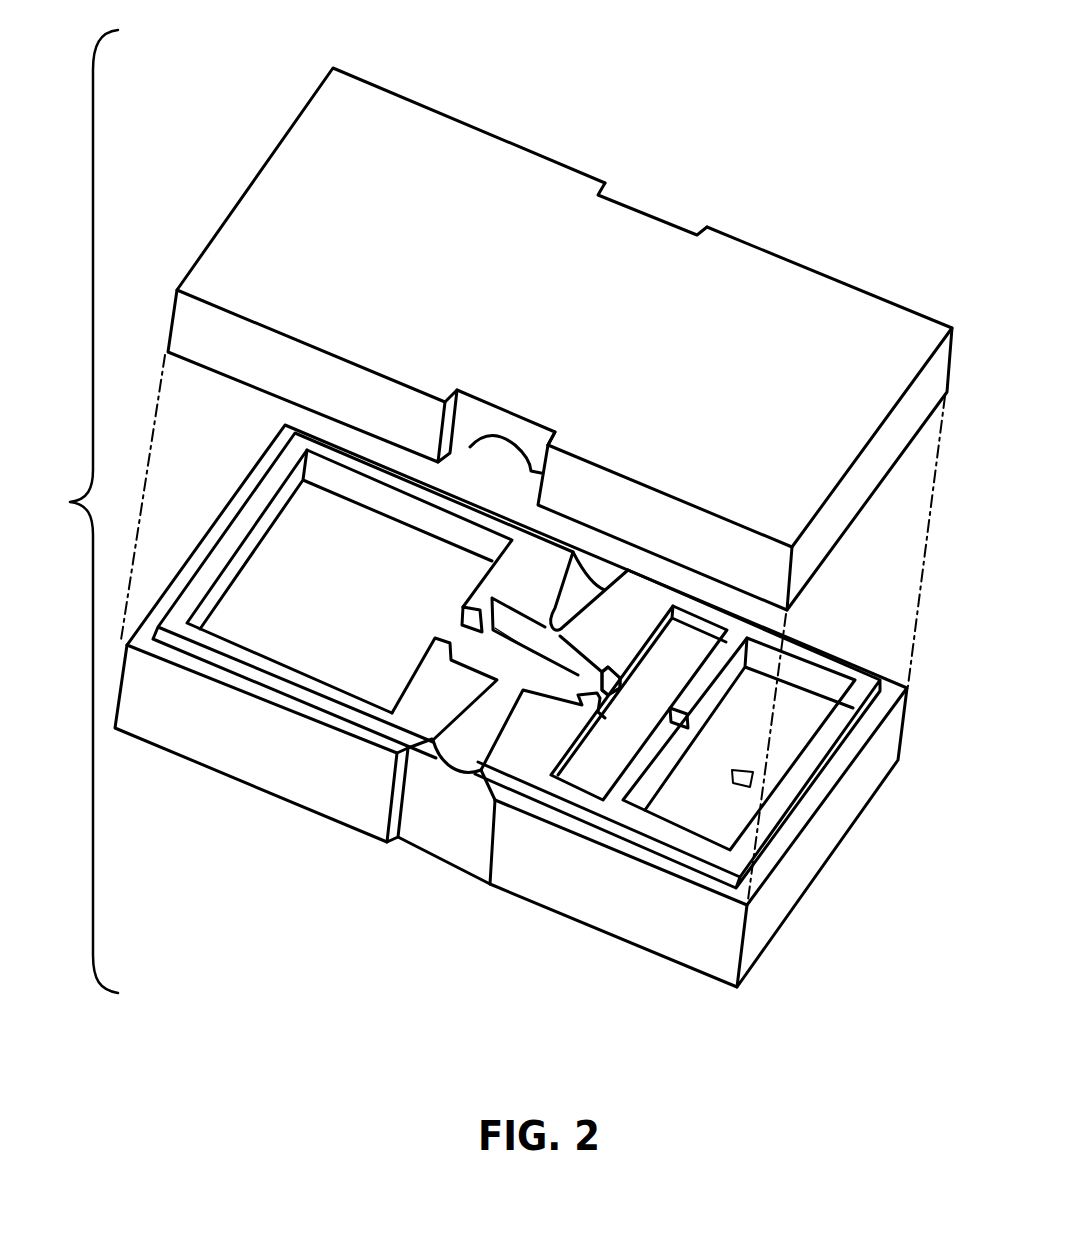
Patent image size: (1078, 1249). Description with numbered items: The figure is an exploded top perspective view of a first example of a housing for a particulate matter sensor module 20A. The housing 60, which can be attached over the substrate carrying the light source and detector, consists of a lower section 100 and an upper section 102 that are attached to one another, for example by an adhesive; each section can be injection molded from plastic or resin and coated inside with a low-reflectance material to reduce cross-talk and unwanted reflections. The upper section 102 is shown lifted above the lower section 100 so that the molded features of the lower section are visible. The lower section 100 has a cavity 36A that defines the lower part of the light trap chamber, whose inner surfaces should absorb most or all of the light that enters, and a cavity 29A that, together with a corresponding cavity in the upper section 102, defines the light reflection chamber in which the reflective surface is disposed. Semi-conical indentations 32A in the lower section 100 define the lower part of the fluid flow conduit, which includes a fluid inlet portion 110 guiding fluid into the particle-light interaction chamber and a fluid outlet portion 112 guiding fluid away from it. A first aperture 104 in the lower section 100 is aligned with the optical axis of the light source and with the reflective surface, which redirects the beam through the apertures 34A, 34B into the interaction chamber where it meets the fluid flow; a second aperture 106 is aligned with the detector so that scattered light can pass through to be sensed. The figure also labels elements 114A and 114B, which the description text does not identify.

The particulate matter sensor module 20A is at (668, 152).
The housing 60 is at (77, 511).
The lower section 100 is at (212, 773).
The upper section 102 is at (347, 90).
The first aperture 104 is at (758, 778).
The second aperture 106 is at (578, 590).
The fluid inlet portion 110 is at (492, 462).
The fluid outlet portion 112 is at (686, 206).
The recess 114A is at (722, 686).
The recess 114B is at (576, 758).
The cavity 29A is at (805, 717).
The semi-conical indentations 32A is at (500, 578).
The aperture 34A is at (690, 730).
The aperture 34B is at (603, 690).
The cavity 36A is at (272, 550).